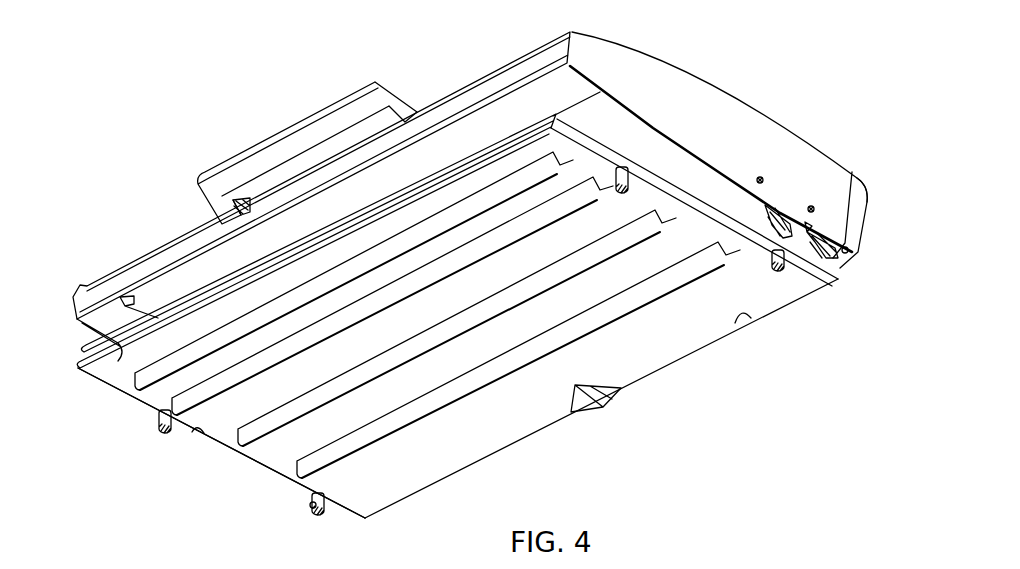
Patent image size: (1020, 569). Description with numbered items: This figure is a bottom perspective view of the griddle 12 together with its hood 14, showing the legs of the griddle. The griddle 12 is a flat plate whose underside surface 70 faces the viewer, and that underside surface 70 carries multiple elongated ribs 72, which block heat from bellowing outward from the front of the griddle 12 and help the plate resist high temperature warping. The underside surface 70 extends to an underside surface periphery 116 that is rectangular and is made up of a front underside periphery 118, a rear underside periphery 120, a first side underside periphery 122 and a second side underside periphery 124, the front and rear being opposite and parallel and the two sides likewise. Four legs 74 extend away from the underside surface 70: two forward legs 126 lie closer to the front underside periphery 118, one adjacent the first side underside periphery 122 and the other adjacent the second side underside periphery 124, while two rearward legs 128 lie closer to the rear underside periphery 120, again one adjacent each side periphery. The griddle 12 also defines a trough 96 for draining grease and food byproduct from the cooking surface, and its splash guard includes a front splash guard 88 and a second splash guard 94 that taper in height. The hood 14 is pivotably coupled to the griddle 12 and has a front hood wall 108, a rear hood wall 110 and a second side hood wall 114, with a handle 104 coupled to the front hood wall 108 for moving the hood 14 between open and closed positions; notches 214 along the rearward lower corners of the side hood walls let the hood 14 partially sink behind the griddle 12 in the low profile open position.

The griddle 12 is at (417, 494).
The hood 14 is at (670, 62).
The underside surface 70 is at (721, 293).
The ribs 72 is at (531, 217).
The legs 74 is at (308, 506).
The front splash guard 88 is at (517, 131).
The second splash guard 94 is at (683, 181).
The trough 96 is at (585, 414).
The handle 104 is at (292, 132).
The front hood wall 108 is at (109, 290).
The rear hood wall 110 is at (862, 229).
The second side hood wall 114 is at (786, 145).
The underside surface periphery 116 is at (257, 459).
The front underside periphery 118 is at (117, 366).
The rear underside periphery 120 is at (749, 318).
The first side underside periphery 122 is at (198, 434).
The second side underside periphery 124 is at (710, 213).
The forward legs 126 is at (618, 167).
The rearward legs 128 is at (328, 510).
The notches 214 is at (848, 174).